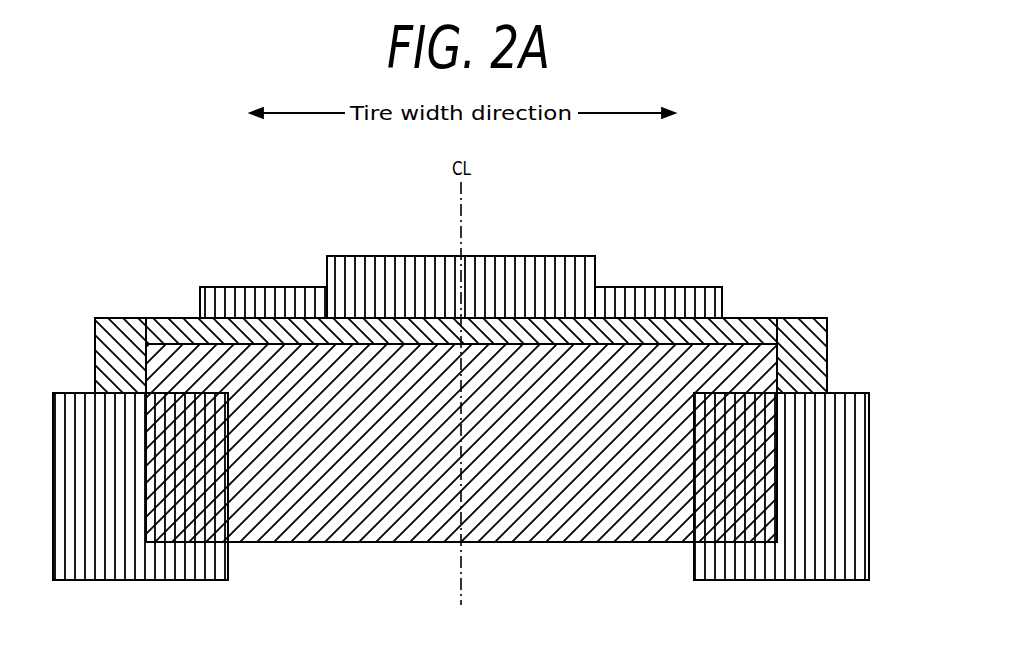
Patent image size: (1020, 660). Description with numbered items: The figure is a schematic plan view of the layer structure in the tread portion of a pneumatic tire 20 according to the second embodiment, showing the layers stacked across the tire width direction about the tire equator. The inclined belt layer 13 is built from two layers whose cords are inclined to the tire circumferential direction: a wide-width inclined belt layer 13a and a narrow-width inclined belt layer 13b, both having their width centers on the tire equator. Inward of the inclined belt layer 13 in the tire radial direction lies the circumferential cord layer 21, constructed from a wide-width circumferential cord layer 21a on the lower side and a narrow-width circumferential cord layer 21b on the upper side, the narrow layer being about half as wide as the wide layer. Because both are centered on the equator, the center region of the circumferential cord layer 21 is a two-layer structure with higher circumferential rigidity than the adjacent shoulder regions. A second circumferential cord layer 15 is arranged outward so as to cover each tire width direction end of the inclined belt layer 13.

The pneumatic tire 20 is at (725, 185).
The inclined belt layer 13 is at (827, 260).
The wide-width inclined belt layer 13a is at (805, 320).
The narrow-width inclined belt layer 13b is at (750, 346).
The circumferential cord layer 21 is at (365, 212).
The wide-width circumferential cord layer 21a is at (292, 296).
The narrow-width circumferential cord layer 21b is at (345, 257).
The second circumferential cord layer 15 is at (113, 566).